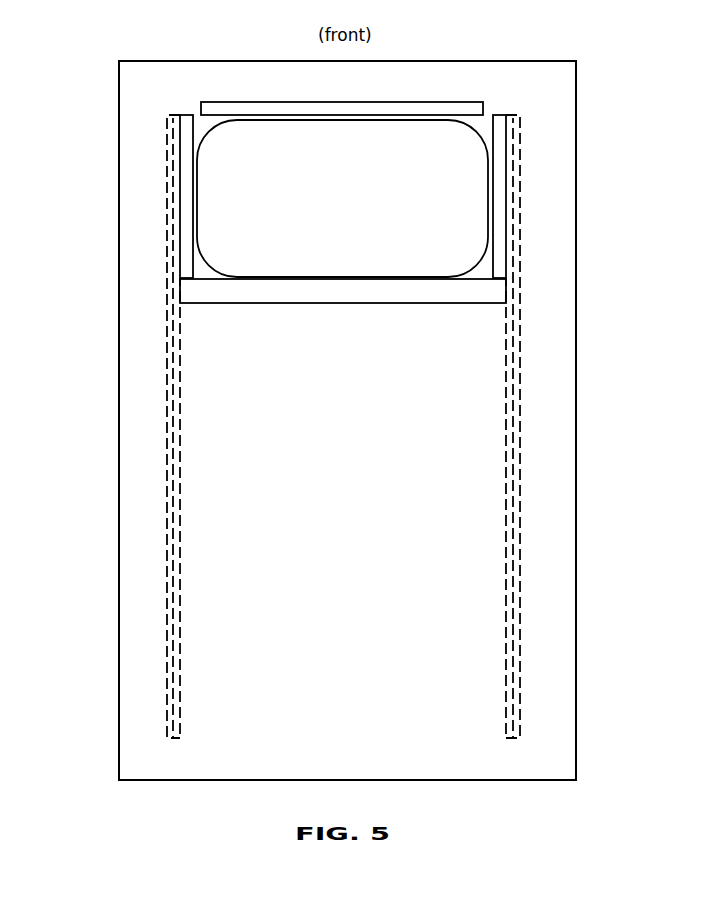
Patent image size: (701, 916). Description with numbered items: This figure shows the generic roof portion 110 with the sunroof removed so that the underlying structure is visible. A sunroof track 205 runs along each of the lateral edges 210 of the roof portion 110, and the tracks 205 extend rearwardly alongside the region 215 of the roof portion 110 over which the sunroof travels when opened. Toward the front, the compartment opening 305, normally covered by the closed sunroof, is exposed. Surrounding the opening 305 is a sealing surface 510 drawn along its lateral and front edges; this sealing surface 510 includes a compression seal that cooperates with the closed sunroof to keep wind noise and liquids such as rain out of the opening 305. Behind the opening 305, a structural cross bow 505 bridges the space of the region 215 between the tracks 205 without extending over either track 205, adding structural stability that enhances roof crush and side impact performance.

The roof portion 110 is at (132, 109).
The compartment opening 305 is at (342, 198).
The region 215 is at (343, 408).
The sealing surface 510 is at (430, 102).
The structural cross bow 505 is at (203, 292).
The sunroof track 205 is at (181, 407).
The lateral edges 210 is at (126, 476).